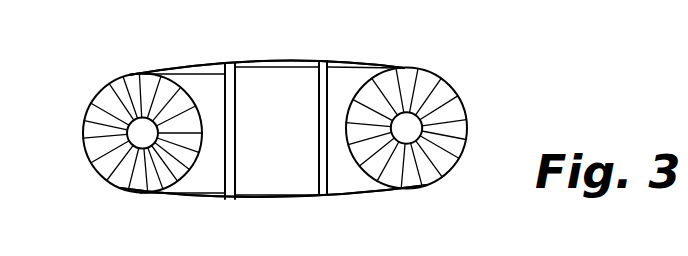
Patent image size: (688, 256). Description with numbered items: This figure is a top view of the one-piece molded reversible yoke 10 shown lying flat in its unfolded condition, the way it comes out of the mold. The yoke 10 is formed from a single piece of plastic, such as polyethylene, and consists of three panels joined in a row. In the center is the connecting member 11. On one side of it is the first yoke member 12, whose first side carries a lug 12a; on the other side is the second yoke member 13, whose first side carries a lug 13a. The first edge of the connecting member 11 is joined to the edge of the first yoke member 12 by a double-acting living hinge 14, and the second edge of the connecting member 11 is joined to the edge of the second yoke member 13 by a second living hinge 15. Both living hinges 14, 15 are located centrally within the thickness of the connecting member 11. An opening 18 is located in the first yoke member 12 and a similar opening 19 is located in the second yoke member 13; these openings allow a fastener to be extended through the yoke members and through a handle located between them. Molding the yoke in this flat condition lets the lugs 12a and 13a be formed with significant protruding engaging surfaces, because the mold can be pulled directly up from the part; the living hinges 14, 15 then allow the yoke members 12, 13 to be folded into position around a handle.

The yoke 10 is at (88, 60).
The connecting member 11 is at (278, 58).
The first yoke member 12 is at (165, 65).
The lug 12a is at (108, 160).
The second yoke member 13 is at (368, 192).
The lug 13a is at (425, 82).
The first living hinge 14 is at (230, 200).
The second living hinge 15 is at (319, 199).
The opening 18 is at (135, 131).
The opening 19 is at (408, 128).